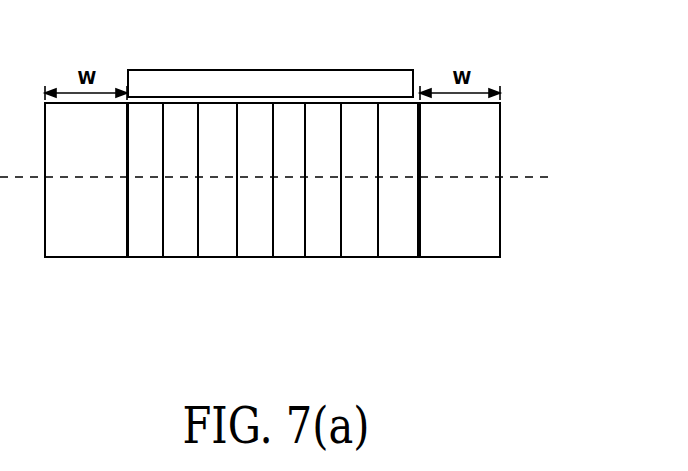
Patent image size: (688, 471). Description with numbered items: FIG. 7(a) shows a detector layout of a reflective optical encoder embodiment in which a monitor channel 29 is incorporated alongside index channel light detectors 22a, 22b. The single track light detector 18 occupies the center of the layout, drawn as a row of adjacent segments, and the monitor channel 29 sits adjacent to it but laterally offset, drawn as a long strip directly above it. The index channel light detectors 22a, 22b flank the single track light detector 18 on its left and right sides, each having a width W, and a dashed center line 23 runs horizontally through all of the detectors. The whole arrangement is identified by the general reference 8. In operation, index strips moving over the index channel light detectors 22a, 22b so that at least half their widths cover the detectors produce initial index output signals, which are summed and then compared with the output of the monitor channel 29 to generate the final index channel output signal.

The light module assembly 8 is at (542, 100).
The single track light detector 18 is at (133, 264).
The index channel light detector 22a is at (79, 237).
The index channel light detector 22b is at (463, 238).
The center axis 23 is at (531, 177).
The monitor channel 29 is at (268, 70).